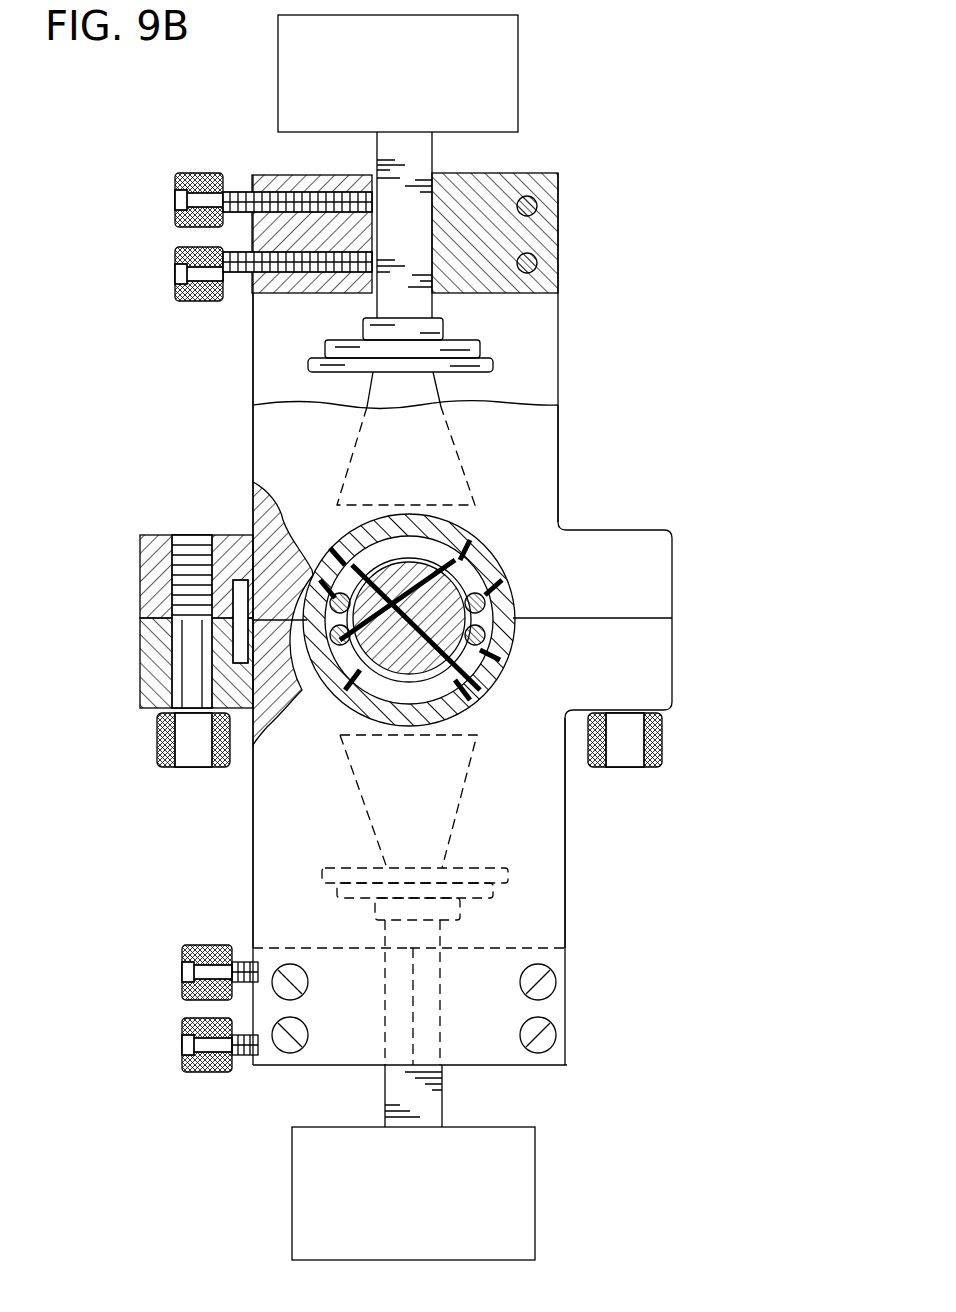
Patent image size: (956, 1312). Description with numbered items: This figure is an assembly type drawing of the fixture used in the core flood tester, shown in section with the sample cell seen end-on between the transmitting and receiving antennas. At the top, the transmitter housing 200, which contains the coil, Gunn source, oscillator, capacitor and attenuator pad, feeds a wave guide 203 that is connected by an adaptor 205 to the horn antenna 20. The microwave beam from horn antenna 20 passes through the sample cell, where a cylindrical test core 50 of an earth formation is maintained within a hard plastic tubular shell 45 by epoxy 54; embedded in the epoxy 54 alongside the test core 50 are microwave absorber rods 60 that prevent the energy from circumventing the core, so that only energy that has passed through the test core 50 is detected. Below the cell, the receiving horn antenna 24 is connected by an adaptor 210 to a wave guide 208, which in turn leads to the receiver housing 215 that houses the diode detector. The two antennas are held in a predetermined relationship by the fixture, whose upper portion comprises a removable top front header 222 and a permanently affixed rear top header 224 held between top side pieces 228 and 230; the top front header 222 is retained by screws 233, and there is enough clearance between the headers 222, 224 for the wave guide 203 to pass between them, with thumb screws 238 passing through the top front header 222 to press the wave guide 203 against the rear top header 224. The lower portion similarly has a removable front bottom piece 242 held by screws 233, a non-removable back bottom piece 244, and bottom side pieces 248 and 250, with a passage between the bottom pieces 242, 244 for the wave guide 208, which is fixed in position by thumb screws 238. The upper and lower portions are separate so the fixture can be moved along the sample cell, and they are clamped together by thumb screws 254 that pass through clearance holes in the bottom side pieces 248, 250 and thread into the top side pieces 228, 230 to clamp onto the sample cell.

The horn antenna 20 is at (462, 447).
The horn antenna 24 is at (458, 813).
The tubular shell 45 is at (503, 643).
The test core 50 is at (437, 580).
The epoxy 54 is at (467, 663).
The absorber rods 60 is at (487, 610).
The transmitter housing 200 is at (370, 115).
The wave guide 203 is at (432, 152).
The adaptor 205 is at (455, 345).
The wave guide 208 is at (442, 1095).
The adaptor 210 is at (452, 912).
The receiver housing 215 is at (378, 1237).
The top front header 222 is at (372, 182).
The rear top header 224 is at (547, 228).
The top side piece 228 is at (265, 355).
The top side piece 230 is at (545, 463).
The screws 233 is at (535, 200).
The thumb screws 238 is at (175, 258).
The front bottom piece 242 is at (312, 928).
The back bottom piece 244 is at (548, 948).
The bottom side piece 248 is at (272, 838).
The bottom side piece 250 is at (553, 848).
The thumb screws 254 is at (185, 742).